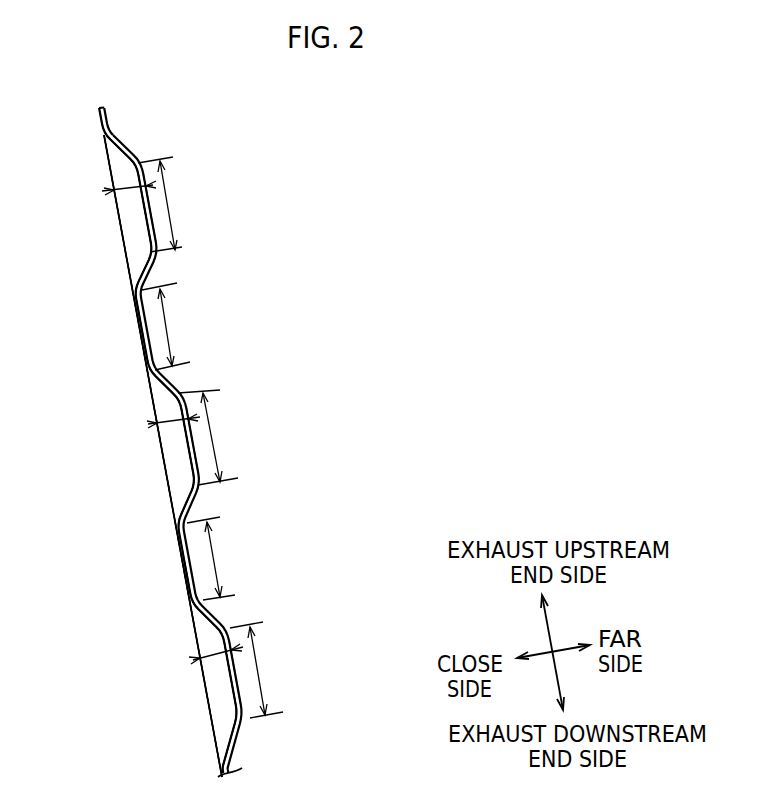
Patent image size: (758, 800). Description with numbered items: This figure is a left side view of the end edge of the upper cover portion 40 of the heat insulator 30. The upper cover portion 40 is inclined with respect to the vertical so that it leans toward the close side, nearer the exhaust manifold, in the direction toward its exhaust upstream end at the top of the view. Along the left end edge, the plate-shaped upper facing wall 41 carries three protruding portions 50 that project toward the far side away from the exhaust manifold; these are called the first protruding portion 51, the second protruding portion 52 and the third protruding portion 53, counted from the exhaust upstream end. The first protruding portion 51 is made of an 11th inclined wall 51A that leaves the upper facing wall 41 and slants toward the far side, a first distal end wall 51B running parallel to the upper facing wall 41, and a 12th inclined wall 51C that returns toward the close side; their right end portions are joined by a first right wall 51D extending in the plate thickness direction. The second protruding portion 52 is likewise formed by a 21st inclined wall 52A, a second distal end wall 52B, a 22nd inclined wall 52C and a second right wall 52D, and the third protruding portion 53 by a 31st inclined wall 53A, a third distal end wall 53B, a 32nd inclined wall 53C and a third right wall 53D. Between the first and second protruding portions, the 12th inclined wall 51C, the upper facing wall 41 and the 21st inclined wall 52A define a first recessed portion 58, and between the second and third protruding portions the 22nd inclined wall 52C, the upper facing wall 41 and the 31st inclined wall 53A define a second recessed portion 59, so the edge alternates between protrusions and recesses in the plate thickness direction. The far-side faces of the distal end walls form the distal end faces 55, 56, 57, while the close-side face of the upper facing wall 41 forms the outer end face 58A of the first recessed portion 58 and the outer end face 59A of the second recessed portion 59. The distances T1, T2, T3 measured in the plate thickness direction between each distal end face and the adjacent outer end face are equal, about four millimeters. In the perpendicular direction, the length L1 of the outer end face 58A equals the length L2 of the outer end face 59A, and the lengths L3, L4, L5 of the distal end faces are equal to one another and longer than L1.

The heat insulator 30 is at (163, 456).
The upper cover portion 40 is at (328, 203).
The upper facing wall 41 is at (107, 107).
The protruding portions 50 is at (167, 440).
The first protruding portion 51 is at (123, 143).
The 11th inclined wall 51A is at (108, 156).
The first distal end wall 51B is at (143, 207).
The 12th inclined wall 51C is at (145, 262).
The first right wall 51D is at (133, 226).
The second protruding portion 52 is at (178, 390).
The 21st inclined wall 52A is at (155, 387).
The second distal end wall 52B is at (182, 440).
The 22nd inclined wall 52C is at (182, 497).
The second right wall 52D is at (180, 457).
The third protruding portion 53 is at (222, 620).
The 31st inclined wall 53A is at (195, 622).
The third distal end wall 53B is at (228, 674).
The 32nd inclined wall 53C is at (230, 730).
The third right wall 53D is at (224, 695).
The distal end face 55 is at (151, 218).
The distal end face 56 is at (195, 452).
The distal end face 57 is at (240, 695).
The first recessed portion 58 is at (163, 305).
The outer end face 58A is at (136, 322).
The second recessed portion 59 is at (210, 545).
The outer end face 59A is at (187, 575).
The distance T1 is at (123, 188).
The distance T2 is at (168, 420).
The distance T3 is at (206, 656).
The length L1 is at (168, 331).
The length L2 is at (217, 572).
The length L3 is at (163, 183).
The length L4 is at (209, 420).
The length L5 is at (255, 653).